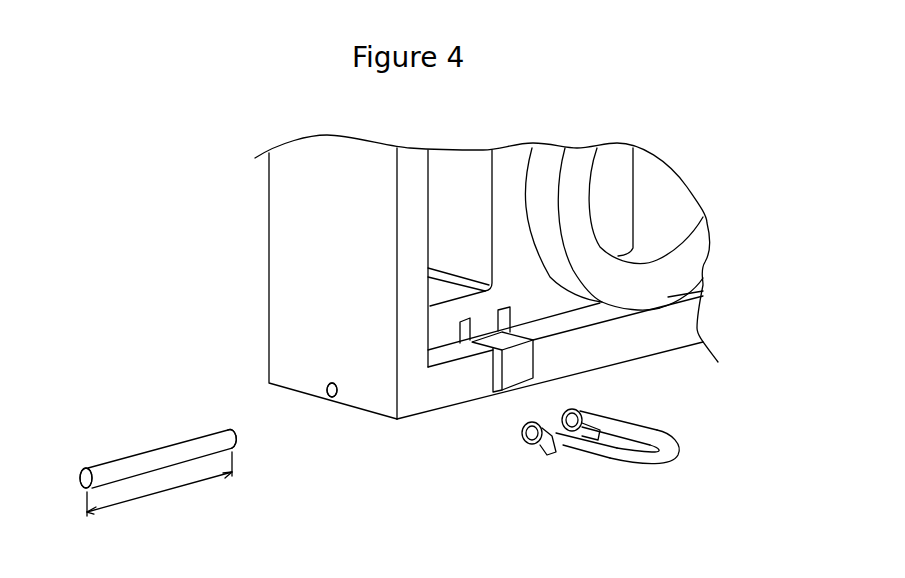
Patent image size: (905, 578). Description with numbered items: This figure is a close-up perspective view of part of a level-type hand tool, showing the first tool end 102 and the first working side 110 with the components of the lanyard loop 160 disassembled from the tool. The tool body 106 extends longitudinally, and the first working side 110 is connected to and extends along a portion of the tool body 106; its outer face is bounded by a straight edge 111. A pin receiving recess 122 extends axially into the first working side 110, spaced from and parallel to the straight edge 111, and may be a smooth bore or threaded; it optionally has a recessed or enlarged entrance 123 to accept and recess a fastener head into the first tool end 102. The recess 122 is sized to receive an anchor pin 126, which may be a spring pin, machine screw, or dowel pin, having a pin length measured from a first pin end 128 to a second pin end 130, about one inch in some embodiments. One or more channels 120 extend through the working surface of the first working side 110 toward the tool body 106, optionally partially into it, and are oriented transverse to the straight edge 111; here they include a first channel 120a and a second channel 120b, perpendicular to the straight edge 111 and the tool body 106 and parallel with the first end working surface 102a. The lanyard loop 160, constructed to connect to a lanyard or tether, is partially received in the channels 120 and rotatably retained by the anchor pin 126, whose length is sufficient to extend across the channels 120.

The first tool end 102 is at (411, 217).
The first end working surface 102a is at (293, 265).
The tool body 106 is at (530, 290).
The first working side 110 is at (680, 325).
The straight edge 111 is at (667, 352).
The channel 120 is at (533, 380).
The first channel 120a is at (494, 368).
The second channel 120b is at (533, 360).
The pin receiving recess 122 is at (330, 396).
The enlarged entrance 123 is at (327, 391).
The anchor pin 126 is at (140, 462).
The first pin end 128 is at (83, 473).
The second pin end 130 is at (227, 430).
The lanyard loop 160 is at (677, 434).